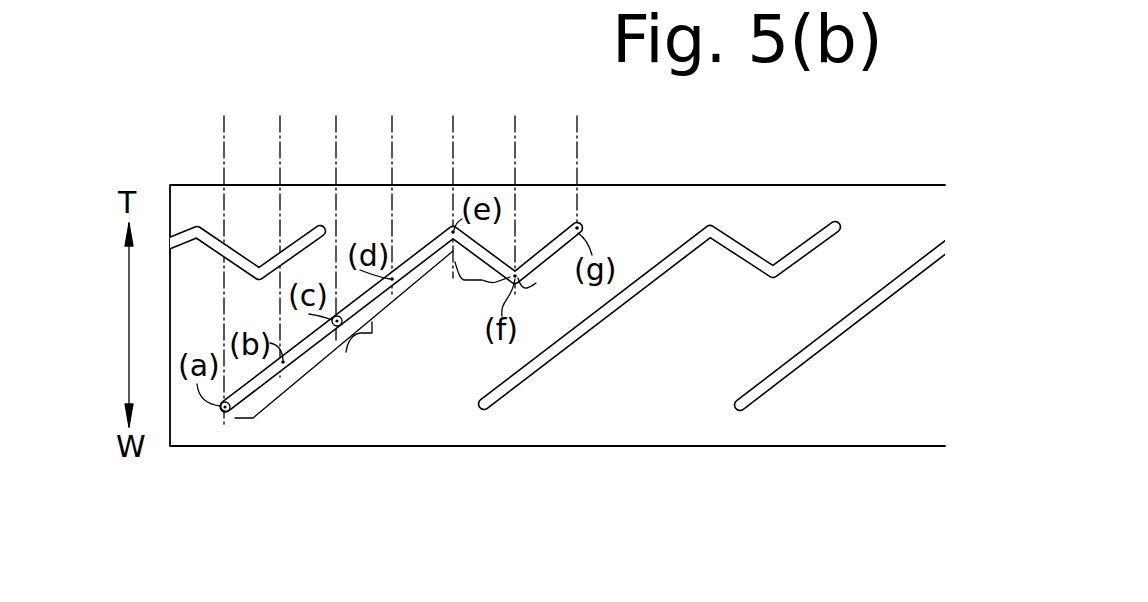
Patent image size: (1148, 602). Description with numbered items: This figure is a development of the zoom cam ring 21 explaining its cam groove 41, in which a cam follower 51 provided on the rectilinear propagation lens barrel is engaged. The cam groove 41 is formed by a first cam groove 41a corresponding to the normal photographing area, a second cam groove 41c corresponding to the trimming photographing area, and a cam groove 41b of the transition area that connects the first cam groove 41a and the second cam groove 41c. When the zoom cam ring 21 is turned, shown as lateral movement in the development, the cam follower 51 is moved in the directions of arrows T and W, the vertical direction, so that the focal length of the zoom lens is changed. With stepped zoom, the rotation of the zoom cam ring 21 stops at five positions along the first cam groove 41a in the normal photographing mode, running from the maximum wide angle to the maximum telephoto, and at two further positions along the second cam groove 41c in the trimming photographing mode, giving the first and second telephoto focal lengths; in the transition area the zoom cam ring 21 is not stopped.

The zoom cam ring 21 is at (431, 425).
The cam groove 41 is at (257, 388).
The first cam groove 41a is at (344, 334).
The cam groove of the transition area 41b is at (464, 293).
The second cam groove 41c is at (549, 299).
The cam follower 51 is at (346, 352).